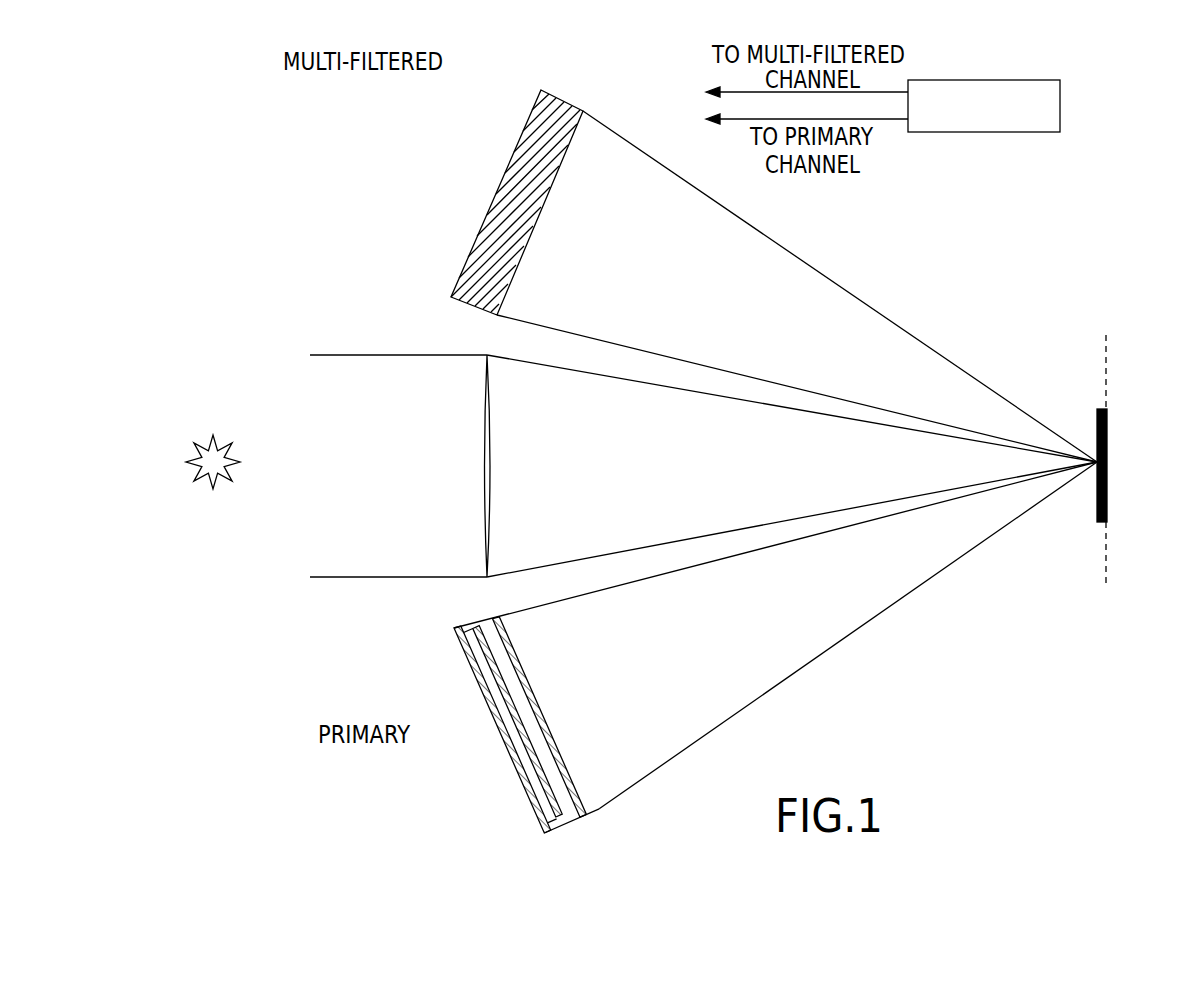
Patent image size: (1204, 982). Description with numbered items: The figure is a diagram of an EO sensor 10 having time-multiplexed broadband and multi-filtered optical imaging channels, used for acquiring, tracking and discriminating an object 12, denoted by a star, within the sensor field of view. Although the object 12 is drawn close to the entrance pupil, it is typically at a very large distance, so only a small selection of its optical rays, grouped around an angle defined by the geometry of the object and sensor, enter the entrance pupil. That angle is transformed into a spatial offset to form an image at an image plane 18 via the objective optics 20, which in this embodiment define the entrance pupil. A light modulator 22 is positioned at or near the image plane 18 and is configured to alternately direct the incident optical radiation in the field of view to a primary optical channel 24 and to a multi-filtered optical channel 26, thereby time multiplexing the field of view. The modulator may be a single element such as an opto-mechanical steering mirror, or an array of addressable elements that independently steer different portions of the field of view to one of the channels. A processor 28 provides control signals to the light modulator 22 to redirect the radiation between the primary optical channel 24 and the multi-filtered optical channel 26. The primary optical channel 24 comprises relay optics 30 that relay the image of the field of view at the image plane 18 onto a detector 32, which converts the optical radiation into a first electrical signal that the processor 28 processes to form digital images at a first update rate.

The EO sensor 10 is at (1170, 152).
The object 12 is at (211, 441).
The image plane 18 is at (371, 355).
The objective optics 20 is at (484, 571).
The light modulator 22 is at (1118, 450).
The primary optical channel 24 is at (836, 690).
The multi-filtered optical channel 26 is at (591, 92).
The processor 28 is at (988, 80).
The relay optics 30 is at (567, 803).
The detector 32 is at (524, 783).